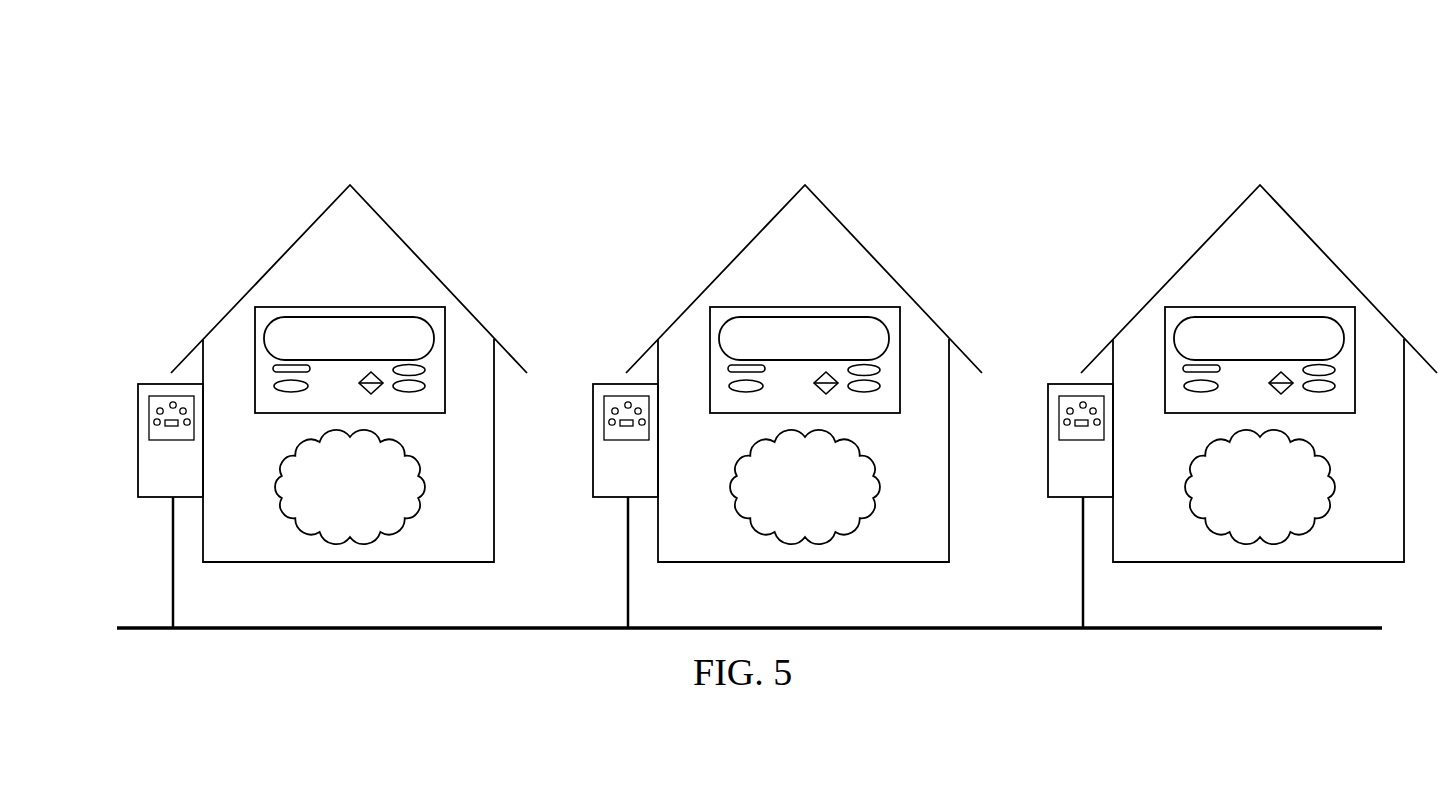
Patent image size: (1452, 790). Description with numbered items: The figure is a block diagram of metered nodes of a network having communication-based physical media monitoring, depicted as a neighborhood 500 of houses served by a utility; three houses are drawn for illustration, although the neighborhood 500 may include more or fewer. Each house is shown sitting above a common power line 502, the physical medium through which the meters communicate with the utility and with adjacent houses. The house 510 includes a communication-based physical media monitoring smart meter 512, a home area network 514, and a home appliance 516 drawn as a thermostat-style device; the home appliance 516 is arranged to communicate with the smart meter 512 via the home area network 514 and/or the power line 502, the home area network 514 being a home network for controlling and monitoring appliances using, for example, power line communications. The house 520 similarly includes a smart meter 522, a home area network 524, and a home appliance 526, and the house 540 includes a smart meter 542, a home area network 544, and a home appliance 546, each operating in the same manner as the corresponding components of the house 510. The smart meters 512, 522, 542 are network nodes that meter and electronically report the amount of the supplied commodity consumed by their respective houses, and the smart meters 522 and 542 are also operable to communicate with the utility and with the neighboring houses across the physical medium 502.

The neighborhood 500 is at (1146, 118).
The power line 502 is at (1010, 632).
The house 510 is at (252, 268).
The communication-based physical media monitoring smart meter 512 is at (138, 450).
The home area network 514 is at (371, 517).
The home appliance 516 is at (340, 296).
The house 520 is at (751, 406).
The communication-based physical media monitoring smart meter 522 is at (589, 506).
The home area network 524 is at (805, 487).
The home appliance 526 is at (805, 327).
The house 540 is at (1206, 406).
The communication-based physical media monitoring smart meter 542 is at (1044, 506).
The home area network 544 is at (1260, 487).
The home appliance 546 is at (1260, 327).